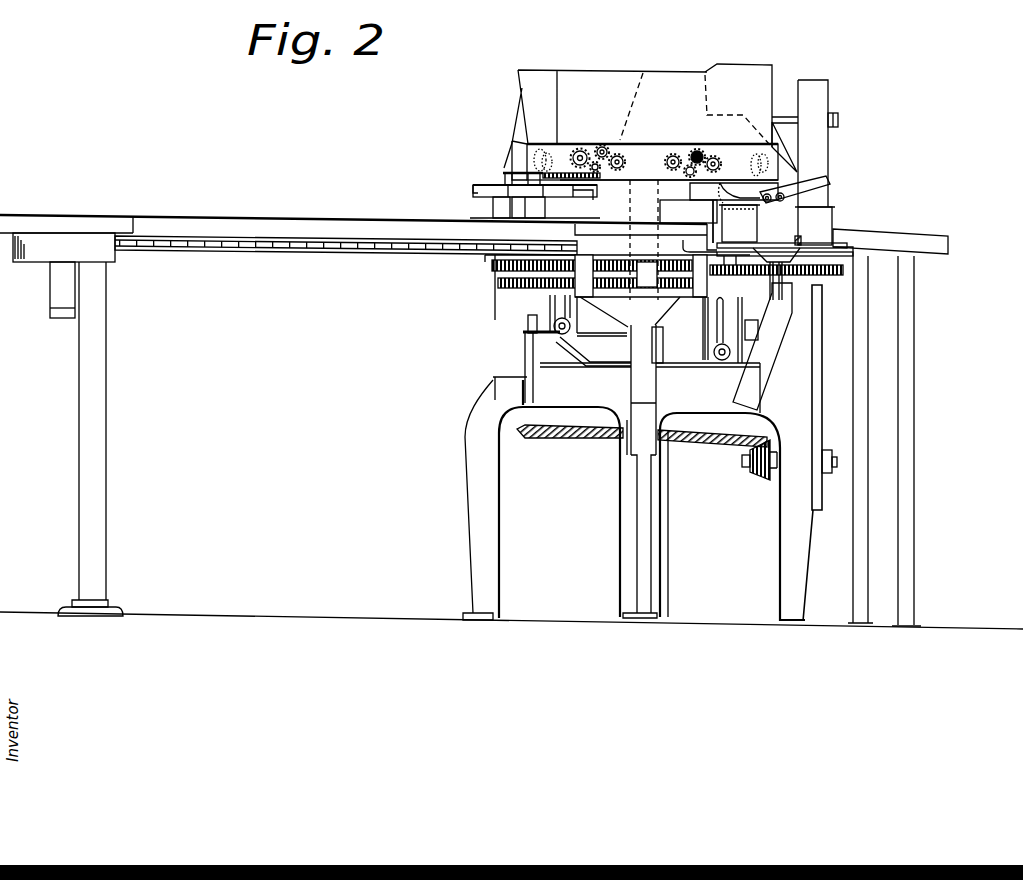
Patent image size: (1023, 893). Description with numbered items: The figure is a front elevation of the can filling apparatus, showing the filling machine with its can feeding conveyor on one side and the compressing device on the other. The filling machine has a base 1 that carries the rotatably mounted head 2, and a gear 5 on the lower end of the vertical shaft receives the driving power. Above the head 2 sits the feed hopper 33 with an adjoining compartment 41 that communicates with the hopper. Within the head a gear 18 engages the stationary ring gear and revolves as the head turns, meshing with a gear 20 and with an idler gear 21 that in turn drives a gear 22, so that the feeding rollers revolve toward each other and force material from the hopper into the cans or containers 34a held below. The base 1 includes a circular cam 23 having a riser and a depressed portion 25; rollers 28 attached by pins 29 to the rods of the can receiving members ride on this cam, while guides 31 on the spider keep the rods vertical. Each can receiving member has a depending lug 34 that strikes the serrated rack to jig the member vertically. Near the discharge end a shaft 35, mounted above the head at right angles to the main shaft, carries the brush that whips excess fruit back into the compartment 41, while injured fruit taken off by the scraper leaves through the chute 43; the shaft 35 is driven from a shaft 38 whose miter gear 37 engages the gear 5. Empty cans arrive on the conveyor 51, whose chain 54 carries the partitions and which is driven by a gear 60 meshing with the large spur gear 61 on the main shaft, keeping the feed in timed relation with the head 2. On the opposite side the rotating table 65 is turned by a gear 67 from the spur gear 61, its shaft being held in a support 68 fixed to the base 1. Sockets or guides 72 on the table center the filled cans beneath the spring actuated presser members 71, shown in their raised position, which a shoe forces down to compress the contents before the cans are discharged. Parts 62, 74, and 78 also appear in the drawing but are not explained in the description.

The base 1 is at (473, 450).
The head 2 is at (657, 150).
The gear 5 is at (552, 436).
The gear 18 is at (598, 170).
The gear 20 is at (578, 150).
The idler gear 21 is at (603, 145).
The gear 22 is at (625, 165).
The circular cam 23 is at (532, 386).
The depressed portion 25 is at (696, 367).
The rollers 28 is at (563, 346).
The pins 29 is at (560, 333).
The guides 31 is at (578, 334).
The feed hopper 33 is at (587, 80).
The depending lug 34 is at (738, 250).
The cans or containers 34a is at (823, 213).
The shaft 35 is at (838, 118).
The miter gear 37 is at (758, 478).
The shaft 38 is at (837, 462).
The compartment 41 is at (758, 66).
The chute 43 is at (785, 147).
The conveyor 51 is at (308, 213).
The chain 54 is at (297, 246).
The gear 60 is at (490, 267).
The spur gear 61 is at (620, 272).
The bracket 62 is at (475, 190).
The rotating table 65 is at (847, 245).
The gear 67 is at (843, 272).
The support 68 is at (767, 367).
The presser members 71 is at (827, 185).
The sockets or guides 72 is at (801, 240).
The bar 74 is at (949, 243).
The block 78 is at (528, 321).